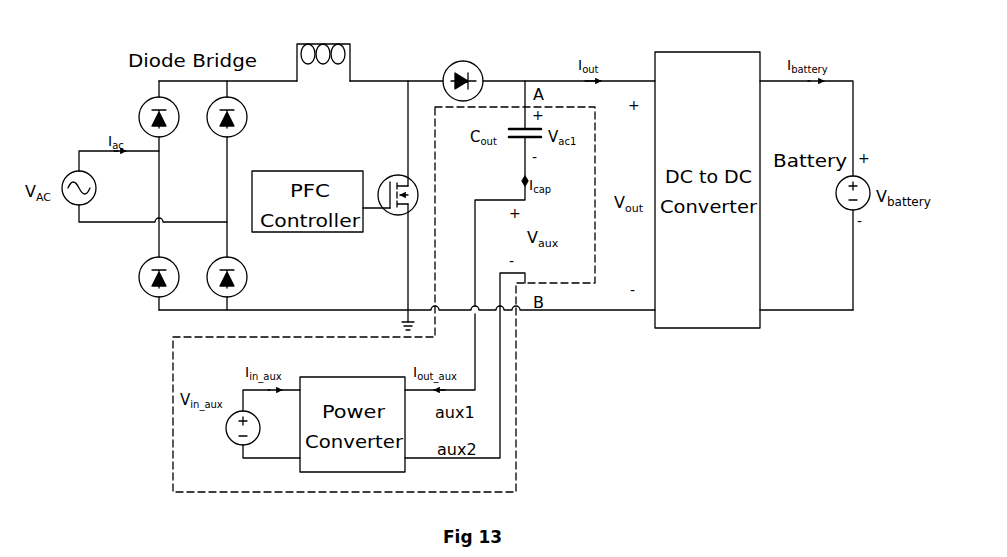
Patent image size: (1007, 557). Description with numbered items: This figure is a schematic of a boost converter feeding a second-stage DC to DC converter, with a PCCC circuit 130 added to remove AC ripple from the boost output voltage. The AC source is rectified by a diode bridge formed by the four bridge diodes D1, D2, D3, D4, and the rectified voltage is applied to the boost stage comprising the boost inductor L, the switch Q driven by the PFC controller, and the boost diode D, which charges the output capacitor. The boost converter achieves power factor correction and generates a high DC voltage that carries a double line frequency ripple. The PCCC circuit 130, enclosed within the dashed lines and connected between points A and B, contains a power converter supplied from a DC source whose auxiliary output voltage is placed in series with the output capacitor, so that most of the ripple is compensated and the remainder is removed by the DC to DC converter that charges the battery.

The PCCC circuit 130 is at (516, 355).
The boost inductor L is at (323, 49).
The boost diode D is at (463, 73).
The PFC switch (MOSFET) Q is at (405, 188).
The bridge diode D1 is at (165, 112).
The bridge diode D2 is at (233, 112).
The bridge diode D3 is at (230, 269).
The bridge diode D4 is at (162, 269).